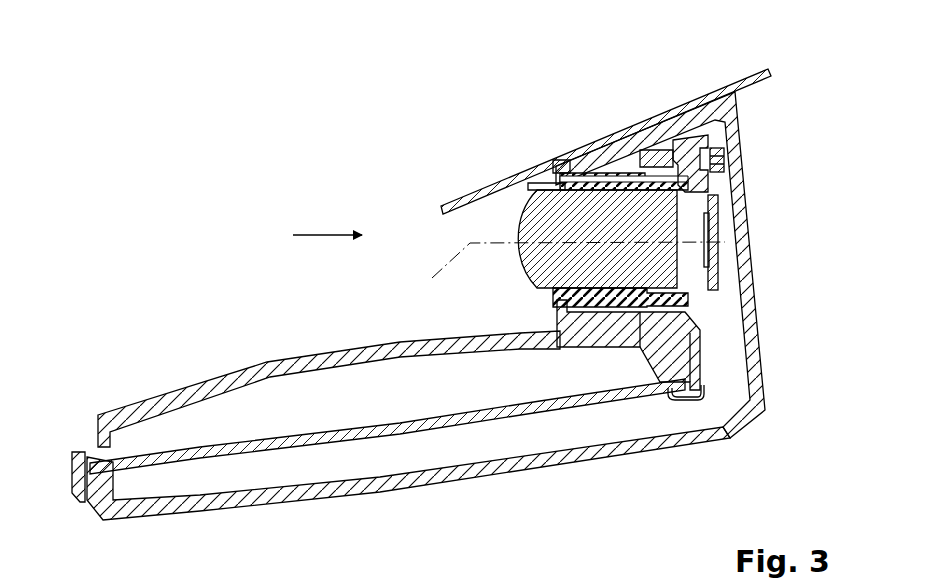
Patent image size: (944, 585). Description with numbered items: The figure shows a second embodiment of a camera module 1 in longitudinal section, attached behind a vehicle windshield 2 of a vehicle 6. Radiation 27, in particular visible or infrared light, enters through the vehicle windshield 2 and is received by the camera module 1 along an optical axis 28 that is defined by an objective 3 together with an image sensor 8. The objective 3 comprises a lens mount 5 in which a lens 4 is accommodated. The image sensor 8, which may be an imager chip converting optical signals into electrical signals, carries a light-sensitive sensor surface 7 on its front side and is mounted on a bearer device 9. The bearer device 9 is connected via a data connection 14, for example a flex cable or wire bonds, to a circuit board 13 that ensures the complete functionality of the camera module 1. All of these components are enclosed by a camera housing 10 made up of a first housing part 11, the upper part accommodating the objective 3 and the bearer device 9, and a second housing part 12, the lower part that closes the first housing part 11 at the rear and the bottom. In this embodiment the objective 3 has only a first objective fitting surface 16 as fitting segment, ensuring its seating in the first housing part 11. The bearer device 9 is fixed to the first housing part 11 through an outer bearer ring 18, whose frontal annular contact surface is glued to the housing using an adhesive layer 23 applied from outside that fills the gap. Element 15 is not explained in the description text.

The camera module 1 is at (414, 195).
The vehicle windshield 2 is at (742, 82).
The objective 3 is at (512, 194).
The lens 4 is at (527, 257).
The lens mount 5 is at (560, 167).
The vehicle 6 is at (166, 146).
The light-sensitive sensor surface 7 is at (702, 214).
The image sensor 8 is at (720, 256).
The bearer device 9 is at (700, 340).
The camera housing 10 is at (348, 324).
The first housing part 11 is at (622, 147).
The second housing part 12 is at (365, 490).
The circuit board 13 is at (463, 418).
The data connection 14 is at (673, 397).
The seal 15 is at (590, 180).
The first objective fitting surface 16 is at (607, 172).
The outer bearer ring 18 is at (675, 155).
The adhesive layer 23 is at (645, 150).
The radiation 27 is at (321, 233).
The optical axis 28 is at (566, 274).